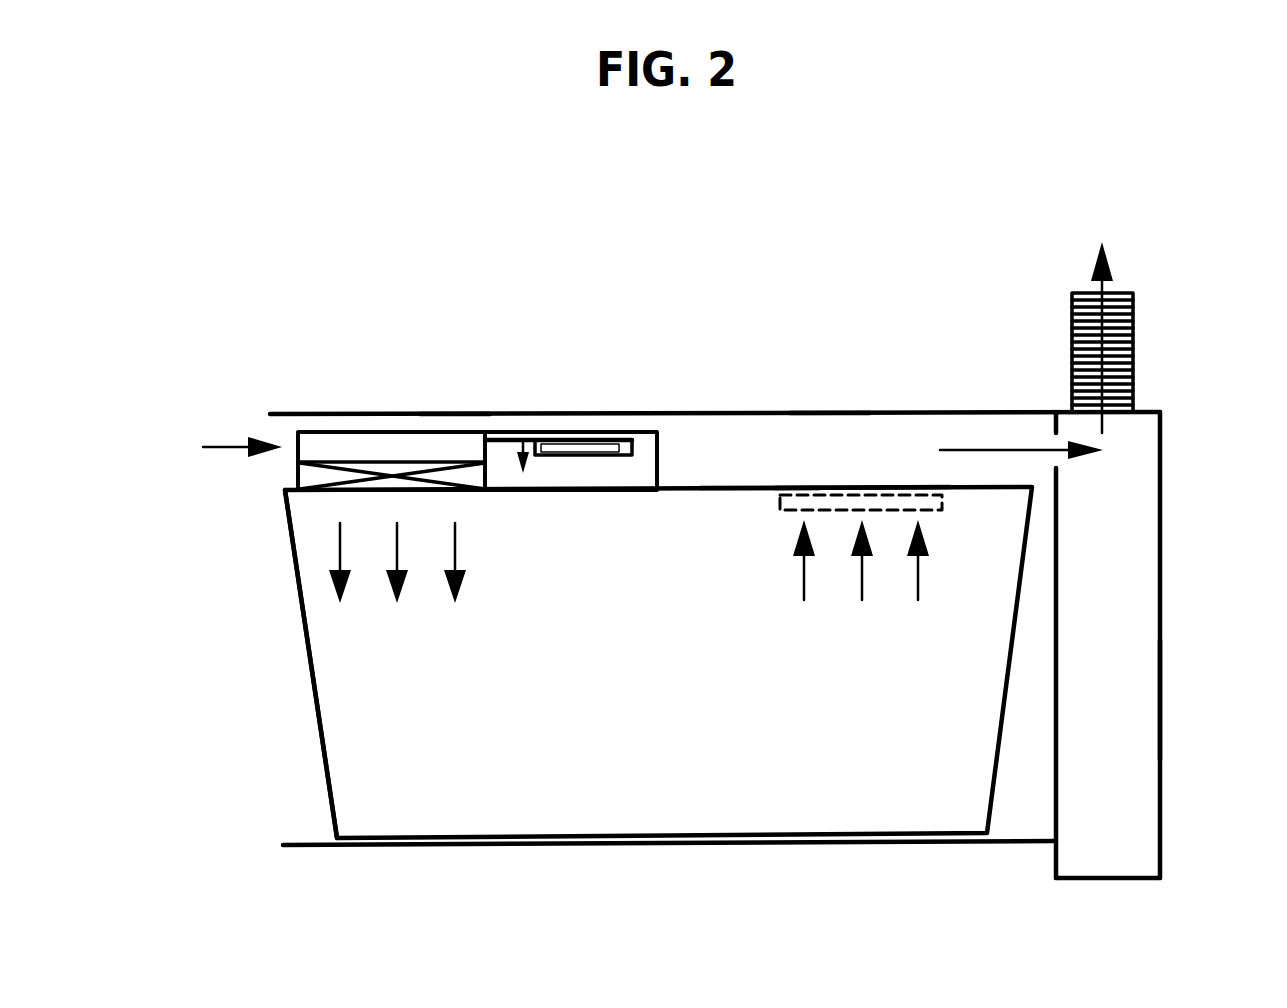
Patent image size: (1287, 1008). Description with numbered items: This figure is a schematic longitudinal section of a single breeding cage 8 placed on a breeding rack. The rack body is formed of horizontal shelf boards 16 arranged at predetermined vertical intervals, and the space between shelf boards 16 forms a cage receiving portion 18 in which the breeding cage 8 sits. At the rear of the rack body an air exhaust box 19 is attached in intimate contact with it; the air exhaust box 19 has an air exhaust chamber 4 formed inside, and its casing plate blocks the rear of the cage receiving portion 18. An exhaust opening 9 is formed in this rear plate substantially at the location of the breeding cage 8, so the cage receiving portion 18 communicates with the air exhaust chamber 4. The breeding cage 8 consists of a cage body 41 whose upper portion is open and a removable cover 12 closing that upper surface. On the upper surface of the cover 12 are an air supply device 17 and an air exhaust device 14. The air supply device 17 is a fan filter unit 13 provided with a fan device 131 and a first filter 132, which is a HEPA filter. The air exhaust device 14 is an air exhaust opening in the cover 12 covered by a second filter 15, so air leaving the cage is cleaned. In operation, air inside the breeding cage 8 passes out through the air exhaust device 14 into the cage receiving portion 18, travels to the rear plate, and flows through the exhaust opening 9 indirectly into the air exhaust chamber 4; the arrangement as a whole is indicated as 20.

The air exhaust chamber 4 is at (1120, 600).
The breeding cage 8 is at (280, 563).
The exhaust opening 9 is at (1047, 441).
The cover 12 is at (760, 486).
The fan filter unit 13 is at (527, 432).
The air exhaust device 14 is at (893, 468).
The second filter 15 is at (780, 505).
The shelf board 16 is at (287, 414).
The air supply device 17 is at (456, 400).
The cage receiving portion 18 is at (825, 452).
The air exhaust box 19 is at (1163, 700).
The cooling unit 20 is at (238, 397).
The cage body 41 is at (314, 690).
The fan device 131 is at (613, 440).
The first filter 132 is at (400, 452).